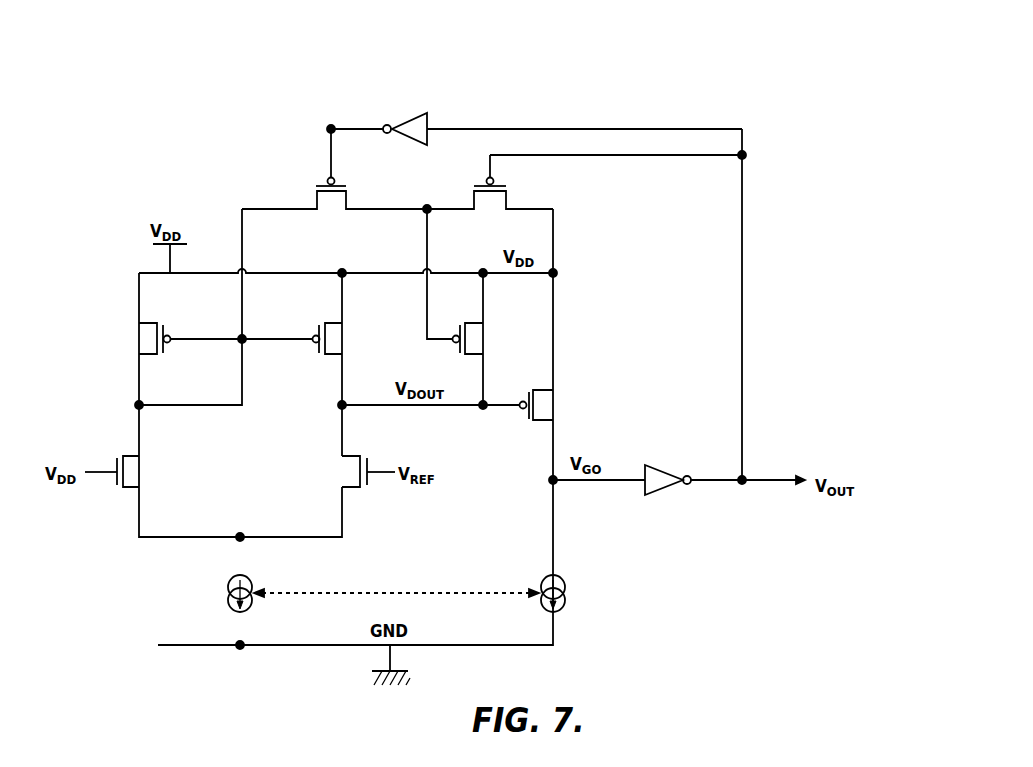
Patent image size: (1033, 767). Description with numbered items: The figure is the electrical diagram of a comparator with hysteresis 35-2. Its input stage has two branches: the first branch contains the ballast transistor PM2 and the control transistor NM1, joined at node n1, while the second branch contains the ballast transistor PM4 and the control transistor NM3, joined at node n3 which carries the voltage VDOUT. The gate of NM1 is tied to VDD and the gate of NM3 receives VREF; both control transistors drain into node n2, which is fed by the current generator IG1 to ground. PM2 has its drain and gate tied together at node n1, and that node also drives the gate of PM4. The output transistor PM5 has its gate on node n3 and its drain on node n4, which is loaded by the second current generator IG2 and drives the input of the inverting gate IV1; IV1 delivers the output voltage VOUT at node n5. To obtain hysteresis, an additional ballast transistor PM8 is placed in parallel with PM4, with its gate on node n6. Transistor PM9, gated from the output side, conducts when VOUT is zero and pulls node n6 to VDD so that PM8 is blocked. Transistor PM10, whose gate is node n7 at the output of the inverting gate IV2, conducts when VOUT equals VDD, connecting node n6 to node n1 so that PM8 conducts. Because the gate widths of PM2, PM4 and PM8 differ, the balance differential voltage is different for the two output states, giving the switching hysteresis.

The comparator with hysteresis 35-2 is at (703, 62).
The PMOS transistor PM10 is at (326, 193).
The PMOS transistor PM9 is at (486, 193).
The ballast transistor PM2 is at (153, 341).
The ballast transistor PM4 is at (332, 345).
The ballast transistor PM8 is at (470, 349).
The output transistor PM5 is at (540, 409).
The control transistor NM1 is at (125, 462).
The control transistor NM3 is at (358, 462).
The inverting gate IV1 is at (660, 492).
The inverting gate IV2 is at (410, 118).
The current generator IG1 is at (228, 587).
The current generator IG2 is at (565, 587).
The interconnection node n1 is at (142, 408).
The interconnection node n2 is at (242, 534).
The interconnection node n3 is at (339, 408).
The interconnection node n4 is at (550, 483).
The interconnection node n5 is at (745, 477).
The interconnection node n6 is at (428, 205).
The interconnection node n7 is at (332, 125).